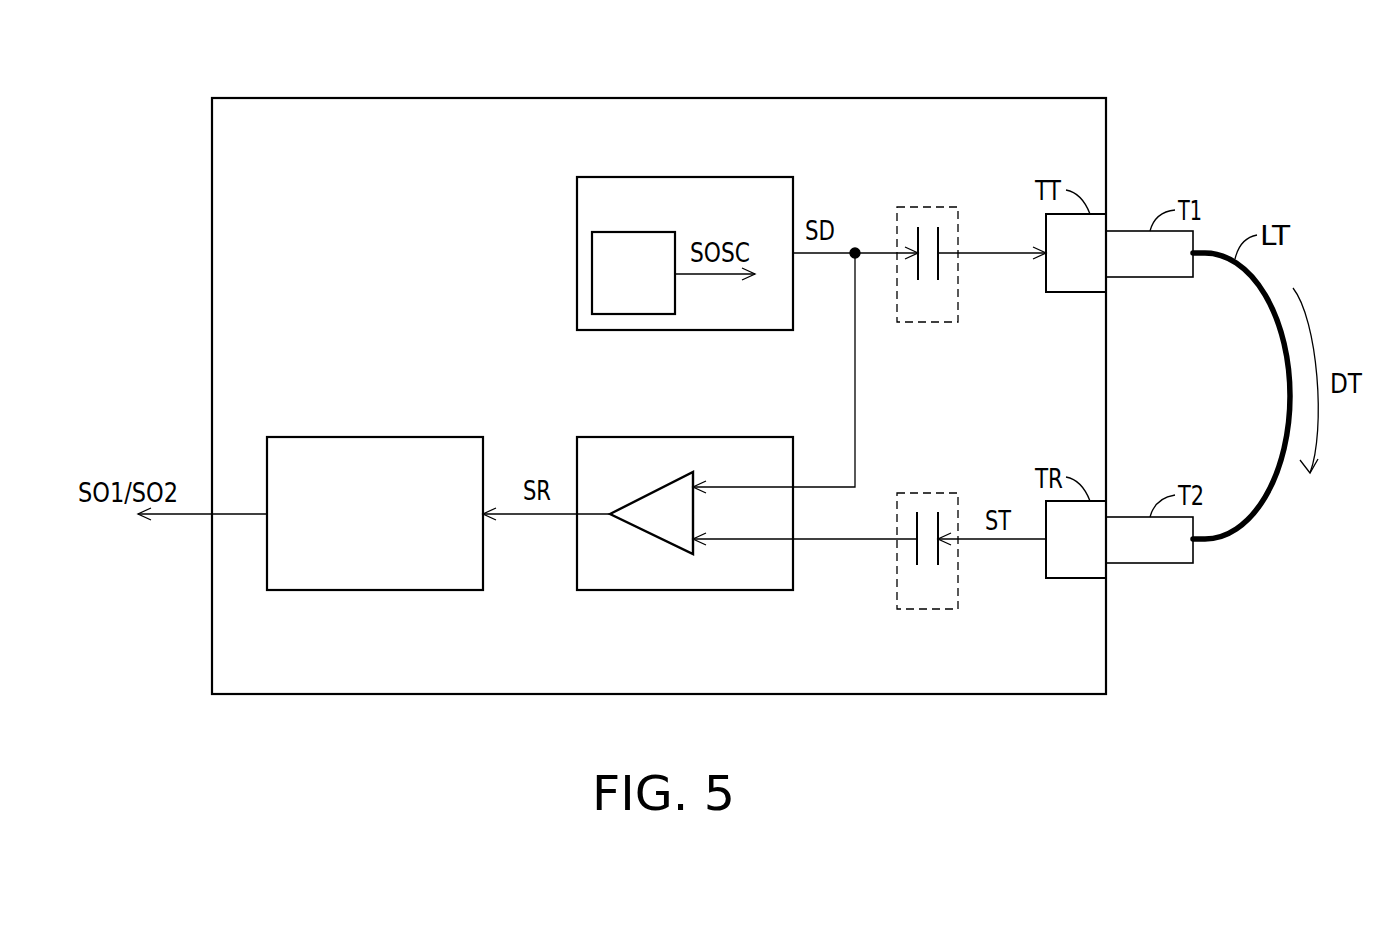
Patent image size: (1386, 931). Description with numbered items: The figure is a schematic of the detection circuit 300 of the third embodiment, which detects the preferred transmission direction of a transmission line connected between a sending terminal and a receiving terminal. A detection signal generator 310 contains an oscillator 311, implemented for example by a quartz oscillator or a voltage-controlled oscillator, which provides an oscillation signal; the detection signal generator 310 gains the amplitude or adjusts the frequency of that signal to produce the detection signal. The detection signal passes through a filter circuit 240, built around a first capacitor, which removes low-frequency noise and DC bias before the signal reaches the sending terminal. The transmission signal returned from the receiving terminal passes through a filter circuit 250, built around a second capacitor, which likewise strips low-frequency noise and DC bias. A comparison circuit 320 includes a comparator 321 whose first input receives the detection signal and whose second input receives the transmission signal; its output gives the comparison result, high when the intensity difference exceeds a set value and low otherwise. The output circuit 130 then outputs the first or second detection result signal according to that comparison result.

The ultrasonic sensing device 300 is at (1005, 98).
The detection signal generator 310 is at (693, 177).
The oscillator 311 is at (635, 232).
The comparison circuit 320 is at (693, 437).
The comparator 321 is at (652, 492).
The filter circuit 240 is at (928, 207).
The filter circuit 250 is at (928, 493).
The output circuit 130 is at (383, 437).